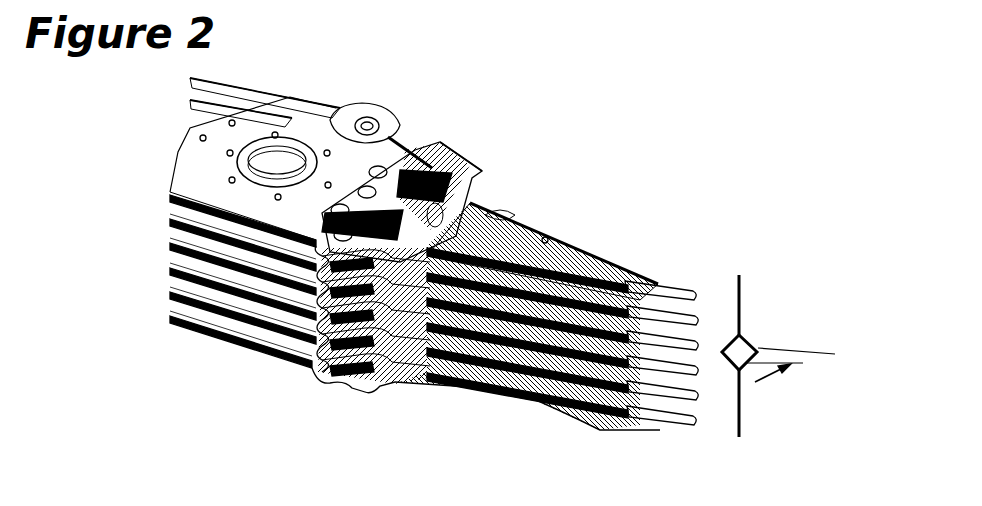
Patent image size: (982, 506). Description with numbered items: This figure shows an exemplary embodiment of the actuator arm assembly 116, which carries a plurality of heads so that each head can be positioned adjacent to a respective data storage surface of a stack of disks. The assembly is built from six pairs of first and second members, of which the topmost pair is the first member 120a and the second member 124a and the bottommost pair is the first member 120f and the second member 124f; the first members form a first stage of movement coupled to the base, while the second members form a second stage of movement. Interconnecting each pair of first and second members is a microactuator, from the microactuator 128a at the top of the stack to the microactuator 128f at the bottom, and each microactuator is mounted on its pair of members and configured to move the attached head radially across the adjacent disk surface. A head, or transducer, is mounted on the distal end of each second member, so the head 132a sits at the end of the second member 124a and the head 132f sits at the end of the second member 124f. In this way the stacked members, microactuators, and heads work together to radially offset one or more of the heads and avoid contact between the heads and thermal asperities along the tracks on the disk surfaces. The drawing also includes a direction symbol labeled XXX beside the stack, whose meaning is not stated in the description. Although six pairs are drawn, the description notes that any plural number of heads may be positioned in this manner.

The actuator arm assembly 116 is at (552, 96).
The first member 120a is at (310, 123).
The first member 120f is at (270, 350).
The microactuator 128a is at (398, 177).
The microactuator 128f is at (386, 362).
The second member 124a is at (548, 247).
The second member 124f is at (513, 387).
The head 132a is at (684, 292).
The head 132f is at (684, 425).
The direction symbol XXX is at (750, 262).